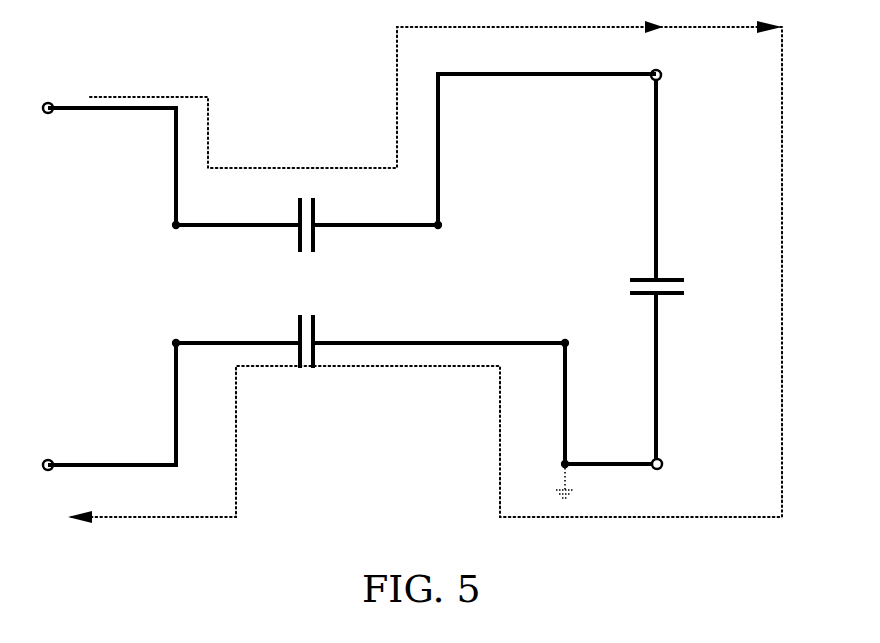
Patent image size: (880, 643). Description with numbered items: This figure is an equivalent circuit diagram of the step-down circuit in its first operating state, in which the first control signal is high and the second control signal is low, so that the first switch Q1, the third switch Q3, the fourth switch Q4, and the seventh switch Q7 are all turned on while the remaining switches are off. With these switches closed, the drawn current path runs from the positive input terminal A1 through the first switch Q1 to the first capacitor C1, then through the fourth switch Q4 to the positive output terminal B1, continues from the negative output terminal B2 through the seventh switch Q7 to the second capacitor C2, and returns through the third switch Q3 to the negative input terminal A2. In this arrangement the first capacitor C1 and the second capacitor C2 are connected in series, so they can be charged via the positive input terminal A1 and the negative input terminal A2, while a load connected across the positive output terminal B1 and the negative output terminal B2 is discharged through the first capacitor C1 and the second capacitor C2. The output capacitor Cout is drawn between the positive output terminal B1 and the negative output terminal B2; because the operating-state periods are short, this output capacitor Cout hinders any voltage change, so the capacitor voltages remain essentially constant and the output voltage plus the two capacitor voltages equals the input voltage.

The positive input terminal A1 is at (51, 84).
The negative input terminal A2 is at (51, 482).
The positive output terminal B1 is at (677, 72).
The negative output terminal B2 is at (677, 473).
The first switch Q1 is at (114, 168).
The third switch Q3 is at (114, 403).
The fourth switch Q4 is at (546, 151).
The seventh switch Q7 is at (604, 419).
The first capacitor C1 is at (307, 223).
The second capacitor C2 is at (370, 329).
The output capacitor Cout is at (686, 269).